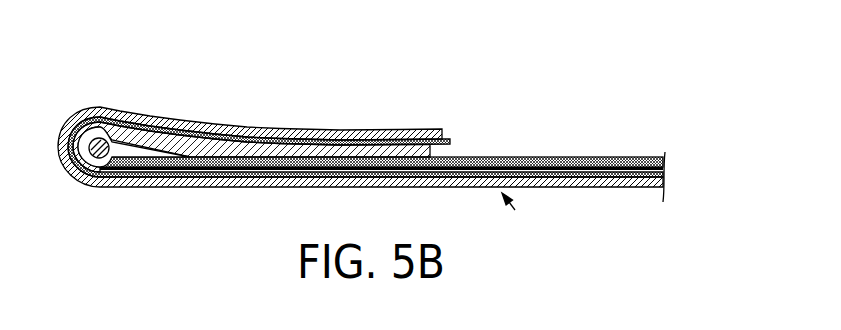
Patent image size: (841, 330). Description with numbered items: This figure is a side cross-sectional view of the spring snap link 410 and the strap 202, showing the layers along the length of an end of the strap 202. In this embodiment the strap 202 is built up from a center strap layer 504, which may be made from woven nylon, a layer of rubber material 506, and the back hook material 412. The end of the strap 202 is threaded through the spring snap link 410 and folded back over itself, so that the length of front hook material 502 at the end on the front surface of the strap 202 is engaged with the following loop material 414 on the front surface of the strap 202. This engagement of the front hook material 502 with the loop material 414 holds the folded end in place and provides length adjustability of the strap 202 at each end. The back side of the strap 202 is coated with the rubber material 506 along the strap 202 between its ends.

The spring snap link 410 is at (64, 114).
The back hook material 412 is at (253, 129).
The front hook material 502 is at (430, 157).
The center strap layer 504 is at (462, 138).
The rubber material 506 is at (533, 157).
The loop material 414 is at (645, 157).
The strap 202 is at (515, 210).